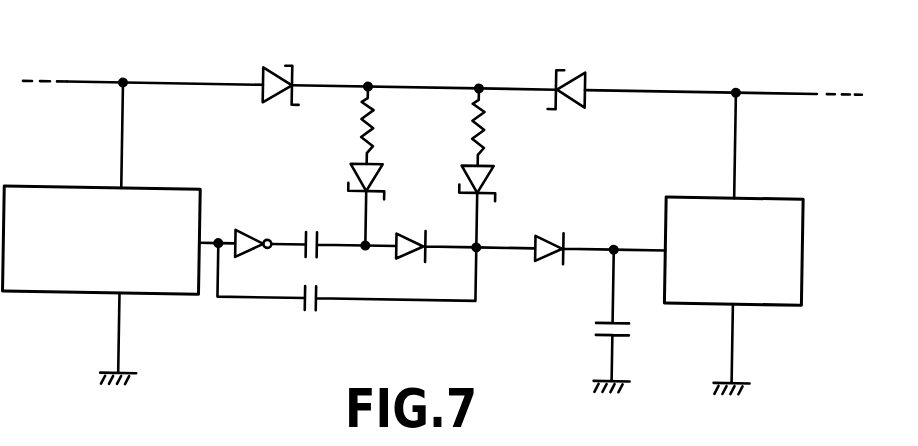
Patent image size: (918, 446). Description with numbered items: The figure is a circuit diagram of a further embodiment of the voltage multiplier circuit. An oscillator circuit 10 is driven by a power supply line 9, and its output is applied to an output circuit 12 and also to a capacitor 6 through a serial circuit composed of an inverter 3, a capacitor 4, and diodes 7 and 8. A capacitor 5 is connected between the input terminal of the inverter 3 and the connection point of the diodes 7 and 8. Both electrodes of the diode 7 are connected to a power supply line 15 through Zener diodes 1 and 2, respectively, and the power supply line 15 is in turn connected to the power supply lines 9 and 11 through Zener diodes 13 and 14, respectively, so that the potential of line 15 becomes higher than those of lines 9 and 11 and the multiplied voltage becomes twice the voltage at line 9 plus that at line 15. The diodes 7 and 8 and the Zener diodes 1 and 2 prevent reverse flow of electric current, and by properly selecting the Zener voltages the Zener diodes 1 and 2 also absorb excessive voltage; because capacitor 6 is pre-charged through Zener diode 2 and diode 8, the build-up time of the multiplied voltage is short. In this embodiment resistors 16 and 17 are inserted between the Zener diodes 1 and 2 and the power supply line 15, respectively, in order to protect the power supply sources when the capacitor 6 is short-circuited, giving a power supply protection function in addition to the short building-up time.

The Zener diode 1 is at (384, 168).
The Zener diode 2 is at (494, 170).
The inverter 3 is at (242, 226).
The capacitor 4 is at (309, 226).
The capacitor 5 is at (311, 310).
The capacitor 6 is at (606, 329).
The diode 7 is at (402, 225).
The diode 8 is at (545, 229).
The power supply line 9 is at (73, 81).
The oscillator circuit 10 is at (194, 186).
The power supply line 11 is at (760, 81).
The output circuit 12 is at (759, 186).
The Zener diode 13 is at (268, 64).
The Zener diode 14 is at (572, 66).
The power supply line 15 is at (418, 82).
The resistor 16 is at (378, 123).
The resistor 17 is at (488, 126).